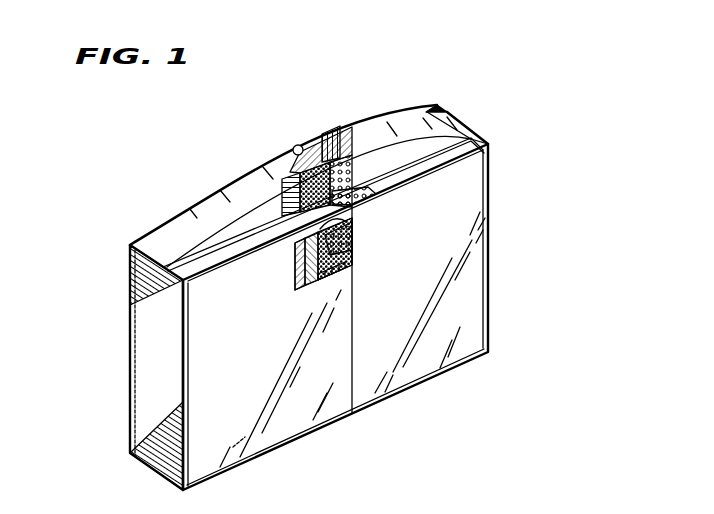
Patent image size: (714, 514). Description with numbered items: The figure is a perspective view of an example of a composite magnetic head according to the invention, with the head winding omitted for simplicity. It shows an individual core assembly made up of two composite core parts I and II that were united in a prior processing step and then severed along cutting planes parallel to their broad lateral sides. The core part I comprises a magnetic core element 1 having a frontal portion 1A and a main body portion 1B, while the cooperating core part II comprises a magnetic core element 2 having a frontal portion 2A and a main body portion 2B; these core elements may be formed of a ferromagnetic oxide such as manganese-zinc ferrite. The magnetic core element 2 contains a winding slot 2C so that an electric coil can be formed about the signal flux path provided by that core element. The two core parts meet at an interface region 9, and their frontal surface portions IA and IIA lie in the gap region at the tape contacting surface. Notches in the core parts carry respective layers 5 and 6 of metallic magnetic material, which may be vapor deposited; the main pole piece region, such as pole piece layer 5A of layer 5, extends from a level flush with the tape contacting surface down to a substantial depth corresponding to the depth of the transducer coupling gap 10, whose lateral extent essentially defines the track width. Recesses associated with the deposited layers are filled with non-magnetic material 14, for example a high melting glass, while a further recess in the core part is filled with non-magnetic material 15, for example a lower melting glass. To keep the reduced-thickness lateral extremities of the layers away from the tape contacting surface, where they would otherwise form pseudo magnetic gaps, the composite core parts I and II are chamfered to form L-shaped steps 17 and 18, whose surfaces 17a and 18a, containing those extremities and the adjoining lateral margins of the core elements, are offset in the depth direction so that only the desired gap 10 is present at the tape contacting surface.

The magnetic core element 1 is at (491, 186).
The frontal portion 1A is at (448, 123).
The main body portion 1B is at (467, 238).
The magnetic core element 2 is at (128, 269).
The frontal portion 2A is at (137, 242).
The main body portion 2B is at (228, 453).
The winding slot 2C is at (293, 266).
The layer of metallic magnetic material 5 is at (333, 128).
The magnetic pole piece layer 5A is at (320, 140).
The layer of metallic magnetic material 6 is at (286, 166).
The interface region 9 is at (355, 359).
The transducer coupling gap 10 is at (292, 144).
The non-magnetic material 14 is at (340, 208).
The non-magnetic material 15 is at (353, 197).
The L-shaped step 17 is at (148, 224).
The offset surface 17a is at (437, 103).
The L-shaped step 18 is at (172, 275).
The offset surface 18a is at (220, 258).
The composite core part I is at (497, 280).
The composite core part II is at (148, 405).
The frontal surface portion IA is at (362, 136).
The frontal surface portion IIA is at (208, 183).